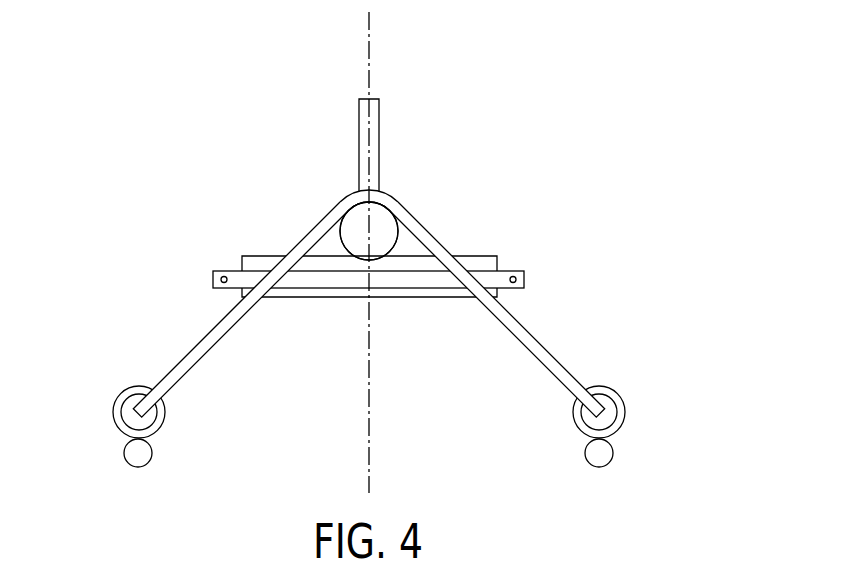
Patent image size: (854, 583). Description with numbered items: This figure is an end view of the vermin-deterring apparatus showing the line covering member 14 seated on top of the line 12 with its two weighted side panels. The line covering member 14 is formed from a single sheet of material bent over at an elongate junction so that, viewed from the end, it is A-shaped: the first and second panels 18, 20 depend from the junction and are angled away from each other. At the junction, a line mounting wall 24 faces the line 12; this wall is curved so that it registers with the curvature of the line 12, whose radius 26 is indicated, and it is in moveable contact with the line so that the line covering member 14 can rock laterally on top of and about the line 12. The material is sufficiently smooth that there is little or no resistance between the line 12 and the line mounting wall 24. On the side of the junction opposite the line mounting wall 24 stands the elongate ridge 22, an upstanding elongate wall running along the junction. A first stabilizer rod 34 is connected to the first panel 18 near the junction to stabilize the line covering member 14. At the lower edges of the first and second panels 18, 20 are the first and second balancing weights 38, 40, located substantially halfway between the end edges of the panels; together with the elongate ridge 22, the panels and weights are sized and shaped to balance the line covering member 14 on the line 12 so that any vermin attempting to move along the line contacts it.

The line covering member 14 is at (540, 100).
The elongate ridge 22 is at (359, 109).
The line mounting wall 24 is at (381, 195).
The line 12 is at (382, 217).
The radius 26 is at (366, 222).
The second panel 20 is at (212, 328).
The first panel 18 is at (527, 331).
The first stabilizer rod 34 is at (338, 314).
The second balancing weight 40 is at (125, 460).
The first balancing weight 38 is at (613, 456).